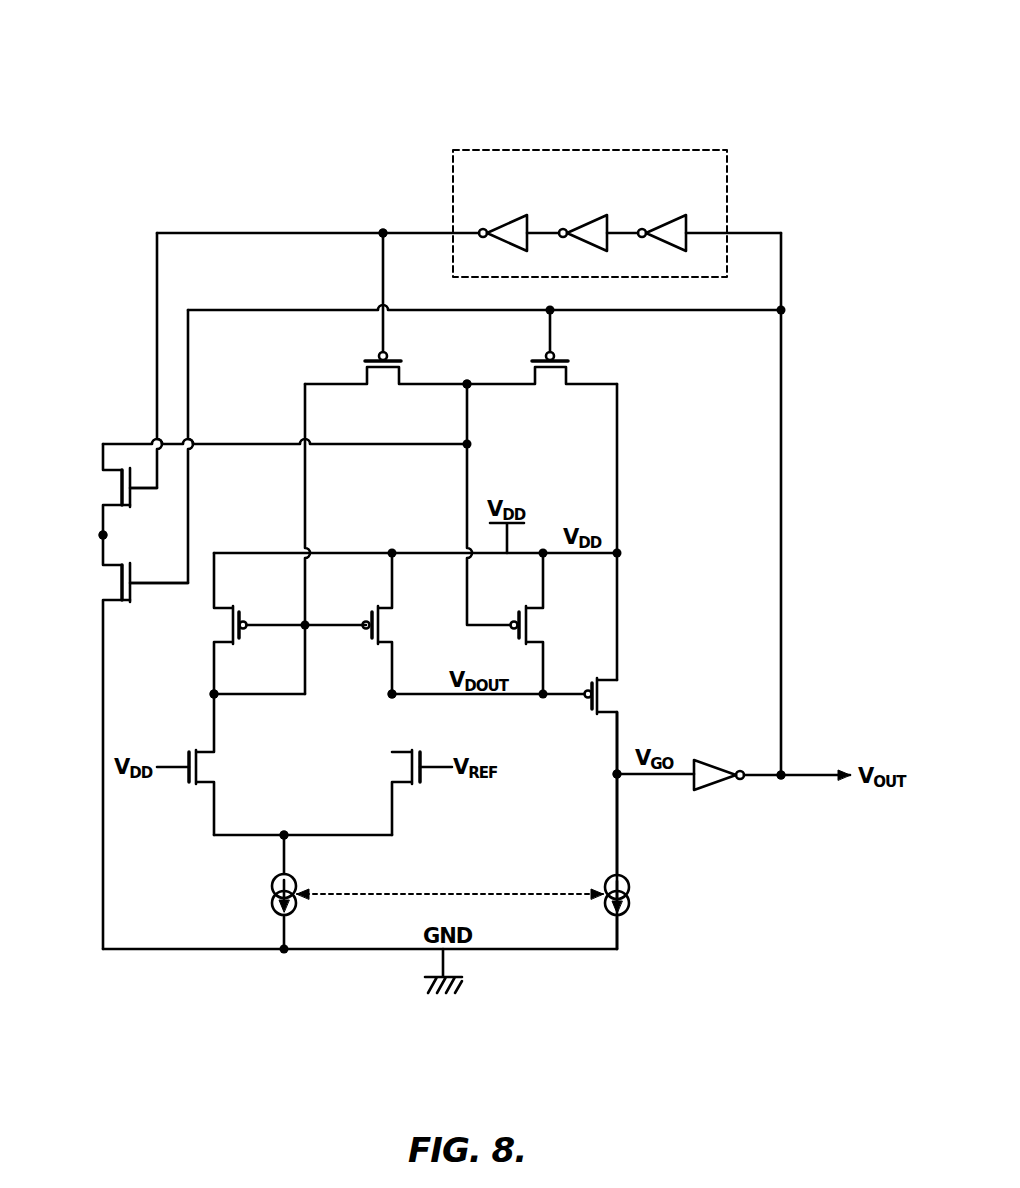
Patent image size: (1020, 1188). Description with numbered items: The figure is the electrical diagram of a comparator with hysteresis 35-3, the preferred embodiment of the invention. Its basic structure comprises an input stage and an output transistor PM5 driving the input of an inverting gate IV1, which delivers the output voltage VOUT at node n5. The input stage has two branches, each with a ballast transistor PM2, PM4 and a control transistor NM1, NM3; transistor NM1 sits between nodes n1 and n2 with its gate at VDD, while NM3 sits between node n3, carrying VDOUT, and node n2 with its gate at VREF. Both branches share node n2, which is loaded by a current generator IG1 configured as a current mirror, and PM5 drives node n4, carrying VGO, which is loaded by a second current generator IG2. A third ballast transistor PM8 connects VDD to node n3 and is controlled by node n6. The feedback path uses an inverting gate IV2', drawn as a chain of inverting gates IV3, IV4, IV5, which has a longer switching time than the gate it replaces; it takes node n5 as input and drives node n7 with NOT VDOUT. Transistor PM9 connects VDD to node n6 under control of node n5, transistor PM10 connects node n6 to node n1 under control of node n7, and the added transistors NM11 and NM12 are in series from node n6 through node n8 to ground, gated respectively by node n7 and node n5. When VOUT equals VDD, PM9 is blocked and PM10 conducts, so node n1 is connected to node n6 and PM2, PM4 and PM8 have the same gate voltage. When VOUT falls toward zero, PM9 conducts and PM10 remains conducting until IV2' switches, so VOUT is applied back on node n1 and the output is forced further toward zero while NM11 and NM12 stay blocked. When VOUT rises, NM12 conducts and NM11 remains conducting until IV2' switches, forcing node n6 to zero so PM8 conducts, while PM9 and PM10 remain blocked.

The comparator with hysteresis 35-3 is at (752, 68).
The inverting gate IV2' is at (590, 187).
The inverting gate IV3 is at (503, 226).
The inverting gate IV4 is at (582, 226).
The inverting gate IV5 is at (661, 226).
The inverting gate IV1 is at (718, 783).
The PMOS transistor PM10 is at (385, 370).
The PMOS transistor PM9 is at (550, 370).
The ballast transistor PM2 is at (238, 627).
The ballast transistor PM4 is at (379, 631).
The ballast transistor PM8 is at (528, 636).
The output transistor PM5 is at (600, 702).
The control transistor NM1 is at (198, 760).
The control transistor NM3 is at (410, 760).
The NMOS transistor NM11 is at (121, 486).
The NMOS transistor NM12 is at (121, 580).
The current generator IG1 is at (272, 890).
The current generator IG2 is at (629, 891).
The interconnection node n1 is at (216, 697).
The interconnection node n2 is at (285, 833).
The interconnection node n3 is at (390, 697).
The interconnection node n4 is at (614, 776).
The interconnection node n5 is at (783, 772).
The interconnection node n6 is at (468, 381).
The interconnection node n7 is at (383, 231).
The interconnection node n8 is at (106, 536).